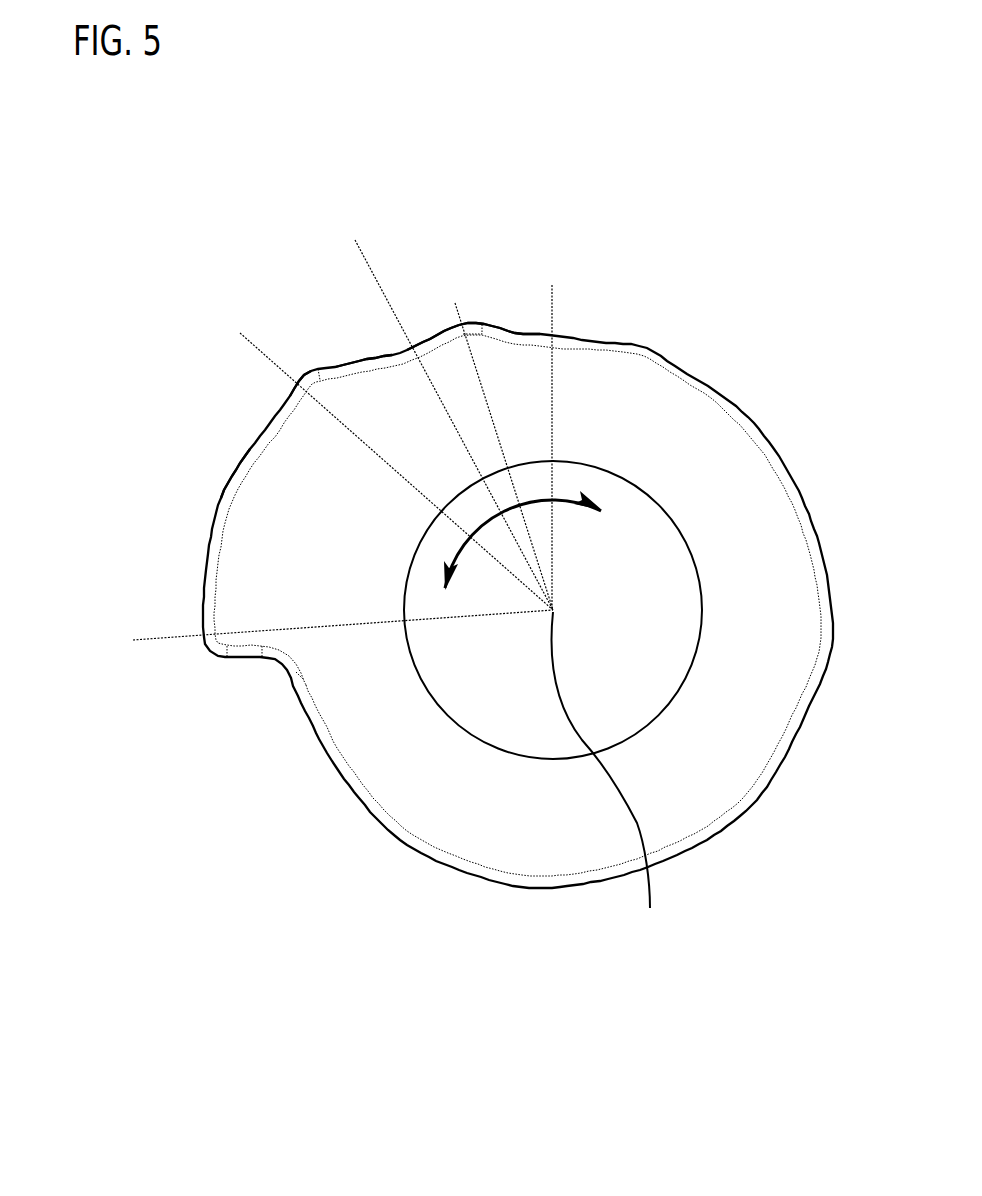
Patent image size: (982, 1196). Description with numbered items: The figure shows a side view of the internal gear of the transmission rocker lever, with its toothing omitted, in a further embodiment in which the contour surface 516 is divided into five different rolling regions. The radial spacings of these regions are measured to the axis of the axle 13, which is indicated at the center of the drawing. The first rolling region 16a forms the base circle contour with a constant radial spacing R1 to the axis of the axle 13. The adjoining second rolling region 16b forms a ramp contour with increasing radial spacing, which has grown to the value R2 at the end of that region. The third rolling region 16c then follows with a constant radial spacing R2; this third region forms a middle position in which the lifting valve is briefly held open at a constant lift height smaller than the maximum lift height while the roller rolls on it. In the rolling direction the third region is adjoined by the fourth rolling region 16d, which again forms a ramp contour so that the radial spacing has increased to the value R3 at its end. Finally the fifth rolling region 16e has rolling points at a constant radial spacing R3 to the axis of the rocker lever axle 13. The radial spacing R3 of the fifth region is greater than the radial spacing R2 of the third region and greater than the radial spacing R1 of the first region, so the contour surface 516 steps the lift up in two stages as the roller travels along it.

The first rolling region 16a is at (644, 347).
The second rolling region 16b is at (506, 332).
The third rolling region 16c is at (433, 330).
The fourth rolling region 16d is at (366, 360).
The fifth rolling region 16e is at (238, 448).
The contour surface 516 is at (473, 313).
The radial spacing R1 is at (553, 446).
The radial spacing R2 is at (475, 368).
The radial spacing R3 is at (290, 373).
The axle 13 is at (607, 797).